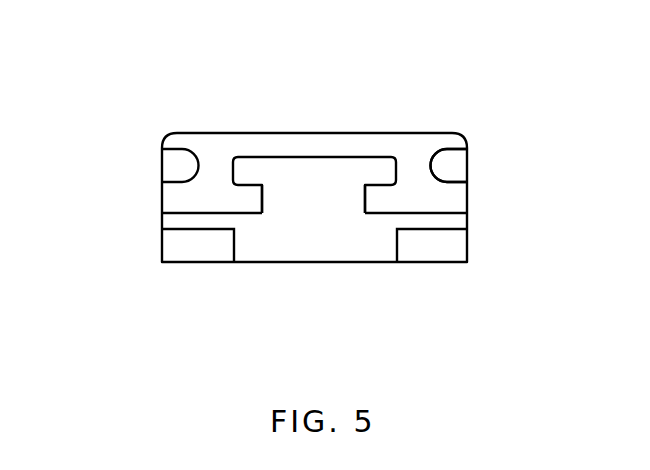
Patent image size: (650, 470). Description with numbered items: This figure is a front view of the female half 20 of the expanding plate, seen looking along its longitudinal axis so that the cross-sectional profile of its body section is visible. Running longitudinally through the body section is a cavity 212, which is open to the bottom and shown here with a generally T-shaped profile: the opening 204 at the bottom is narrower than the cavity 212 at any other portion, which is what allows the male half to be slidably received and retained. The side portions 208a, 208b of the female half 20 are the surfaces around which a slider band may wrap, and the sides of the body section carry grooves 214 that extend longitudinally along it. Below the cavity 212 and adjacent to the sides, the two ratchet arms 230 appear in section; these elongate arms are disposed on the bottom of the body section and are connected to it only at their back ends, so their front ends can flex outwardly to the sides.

The female base half 20 is at (210, 101).
The opening 204 is at (263, 207).
The side portion 208a is at (165, 198).
The side portion 208b is at (462, 193).
The cavity 212 is at (317, 198).
The groove 214 is at (455, 167).
The ratchet arm 230 is at (457, 242).